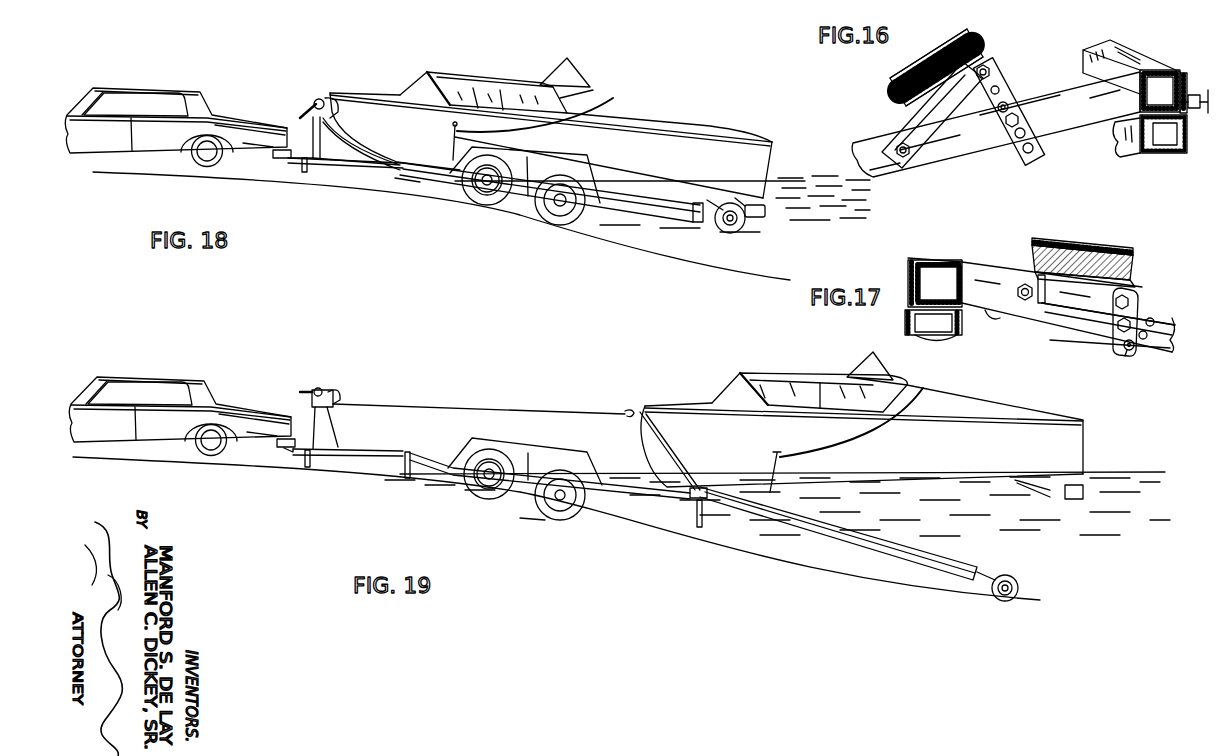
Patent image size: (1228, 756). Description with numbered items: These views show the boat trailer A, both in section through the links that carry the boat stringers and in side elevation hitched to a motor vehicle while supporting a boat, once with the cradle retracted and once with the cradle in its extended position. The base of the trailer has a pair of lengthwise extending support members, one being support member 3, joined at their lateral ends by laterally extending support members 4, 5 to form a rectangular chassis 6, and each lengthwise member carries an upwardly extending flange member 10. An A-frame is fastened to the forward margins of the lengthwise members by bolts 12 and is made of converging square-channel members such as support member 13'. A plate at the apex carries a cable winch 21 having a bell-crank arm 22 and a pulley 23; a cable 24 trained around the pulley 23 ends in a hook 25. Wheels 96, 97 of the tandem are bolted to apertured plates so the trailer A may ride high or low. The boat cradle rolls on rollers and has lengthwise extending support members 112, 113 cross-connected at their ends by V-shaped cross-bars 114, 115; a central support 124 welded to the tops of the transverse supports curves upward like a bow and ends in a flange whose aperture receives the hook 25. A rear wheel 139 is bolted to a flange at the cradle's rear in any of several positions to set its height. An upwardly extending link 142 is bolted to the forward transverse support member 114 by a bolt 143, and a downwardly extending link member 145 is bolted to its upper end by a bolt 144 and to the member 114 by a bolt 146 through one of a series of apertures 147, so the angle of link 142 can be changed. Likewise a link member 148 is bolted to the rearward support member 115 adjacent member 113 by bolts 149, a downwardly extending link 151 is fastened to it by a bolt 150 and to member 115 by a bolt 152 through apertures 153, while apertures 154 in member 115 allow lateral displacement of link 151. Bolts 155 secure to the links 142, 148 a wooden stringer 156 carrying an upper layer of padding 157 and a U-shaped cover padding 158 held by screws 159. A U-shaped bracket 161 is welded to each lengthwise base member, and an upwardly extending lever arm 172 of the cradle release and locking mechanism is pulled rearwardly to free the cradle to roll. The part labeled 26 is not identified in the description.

In FIG. 16, the lengthwise extending support member 3 is at (1180, 153).
In FIG. 17, the lengthwise extending support member 3 is at (957, 336).
In FIG. 19, the laterally extending support member 4 is at (404, 480).
In FIG. 19, the laterally extending support member 5 is at (698, 528).
In FIG. 19, the rectangular chassis 6 is at (647, 499).
In FIG. 17, the upwardly extending flange member 10 is at (908, 270).
In FIG. 16, the bolts 12 is at (1170, 137).
In FIG. 16, the A-frame support member 13' is at (1131, 56).
In FIG. 18, the cable winch 21 is at (322, 100).
In FIG. 19, the cable winch 21 is at (308, 388).
In FIG. 18, the bell-crank arm 22 is at (305, 110).
In FIG. 19, the bell-crank arm 22 is at (310, 406).
In FIG. 18, the pulley 23 is at (332, 100).
In FIG. 19, the pulley 23 is at (341, 396).
In FIG. 19, the cable 24 is at (495, 407).
In FIG. 19, the hook 25 is at (627, 410).
In FIG. 18, the trailer jack 26 is at (300, 166).
In FIG. 19, the trailer jack 26 is at (305, 468).
In FIG. 18, the motor vehicle wheel 96 is at (487, 200).
In FIG. 19, the motor vehicle wheel 96 is at (488, 497).
In FIG. 18, the motor vehicle wheel 97 is at (557, 218).
In FIG. 19, the motor vehicle wheel 97 is at (560, 520).
In FIG. 19, the lengthwise extending support member 112 is at (940, 553).
In FIG. 16, the lengthwise extending support member 113 is at (1163, 70).
In FIG. 17, the lengthwise extending support member 113 is at (957, 262).
In FIG. 16, the forward transverse support member 114 is at (1063, 120).
In FIG. 17, the rearward transverse support member 115 is at (1170, 350).
In FIG. 19, the central support 124 is at (947, 573).
In FIG. 19, the rear wheel 139 is at (1012, 600).
In FIG. 16, the upwardly extending link 142 is at (947, 110).
In FIG. 16, the bolt 143 is at (905, 160).
In FIG. 16, the bolt 144 is at (984, 64).
In FIG. 16, the downwardly extending link member 145 is at (1036, 158).
In FIG. 16, the bolt 146 is at (1005, 105).
In FIG. 16, the apertures 147 is at (1012, 112).
In FIG. 17, the link member 148 is at (1139, 300).
In FIG. 17, the bolts 149 is at (1025, 283).
In FIG. 17, the bolt 150 is at (1130, 294).
In FIG. 17, the downwardly extending link 151 is at (1128, 357).
In FIG. 17, the bolt 152 is at (1152, 318).
In FIG. 17, the apertures 153 is at (1122, 348).
In FIG. 17, the apertures 154 is at (1149, 334).
In FIG. 17, the bolts 155 is at (1042, 304).
In FIG. 16, the stringer 156 is at (934, 47).
In FIG. 17, the stringer 156 is at (1105, 248).
In FIG. 16, the upper layer of padding 157 is at (892, 97).
In FIG. 17, the upper layer of padding 157 is at (1070, 240).
In FIG. 16, the U-shaped cover padding 158 is at (905, 76).
In FIG. 17, the U-shaped cover padding 158 is at (1052, 238).
In FIG. 16, the screws 159 is at (895, 118).
In FIG. 17, the screws 159 is at (1132, 278).
In FIG. 16, the U-shaped bracket 161 is at (1197, 94).
In FIG. 19, the lever arm 172 is at (780, 462).
In FIG. 18, the boat trailer A is at (412, 187).
In FIG. 19, the boat trailer A is at (532, 518).